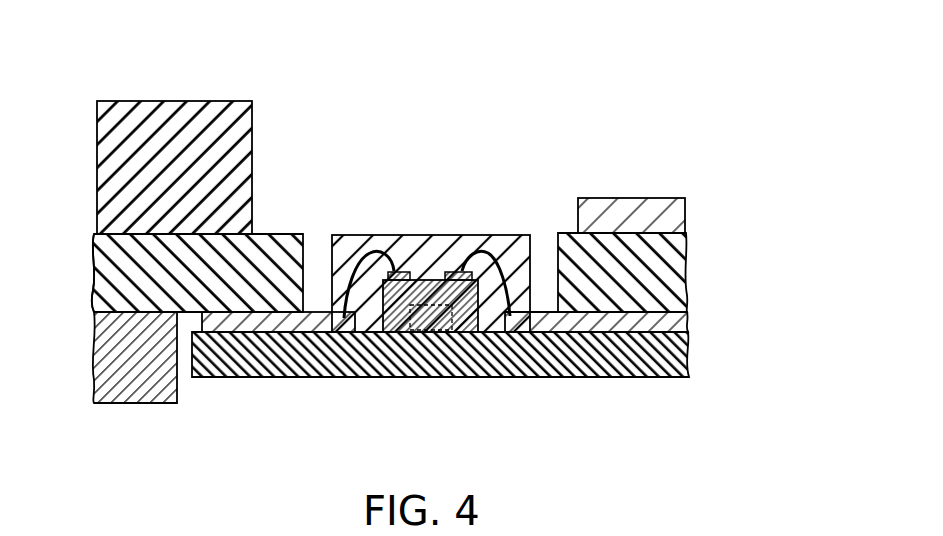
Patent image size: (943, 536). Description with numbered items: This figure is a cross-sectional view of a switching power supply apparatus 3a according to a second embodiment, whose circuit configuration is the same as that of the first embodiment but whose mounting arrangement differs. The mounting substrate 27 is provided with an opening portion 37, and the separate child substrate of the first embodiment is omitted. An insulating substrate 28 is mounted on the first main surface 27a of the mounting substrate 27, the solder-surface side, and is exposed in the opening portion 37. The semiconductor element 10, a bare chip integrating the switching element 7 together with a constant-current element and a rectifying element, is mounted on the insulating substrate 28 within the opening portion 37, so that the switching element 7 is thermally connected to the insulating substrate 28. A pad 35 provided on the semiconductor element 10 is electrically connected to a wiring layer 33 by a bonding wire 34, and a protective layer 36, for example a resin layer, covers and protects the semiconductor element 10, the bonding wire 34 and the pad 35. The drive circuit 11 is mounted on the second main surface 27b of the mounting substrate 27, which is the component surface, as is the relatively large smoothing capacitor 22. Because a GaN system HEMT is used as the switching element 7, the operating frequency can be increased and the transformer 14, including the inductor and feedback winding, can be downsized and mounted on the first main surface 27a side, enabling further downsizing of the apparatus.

The switching power supply apparatus 3a is at (731, 80).
The smoothing capacitor 22 is at (205, 106).
The mounting substrate 27 is at (285, 263).
The first main surface 27a is at (134, 314).
The second main surface 27b is at (270, 236).
The transformer 14 is at (162, 383).
The insulating substrate 28 is at (670, 353).
The wiring layer 33 is at (310, 327).
The drive circuit 11 is at (625, 213).
The protective layer 36 is at (442, 246).
The switching element 7 is at (425, 310).
The semiconductor element 10 is at (480, 302).
The pad 35 is at (457, 271).
The bonding wire 34 is at (380, 255).
The opening portion 37 is at (317, 250).